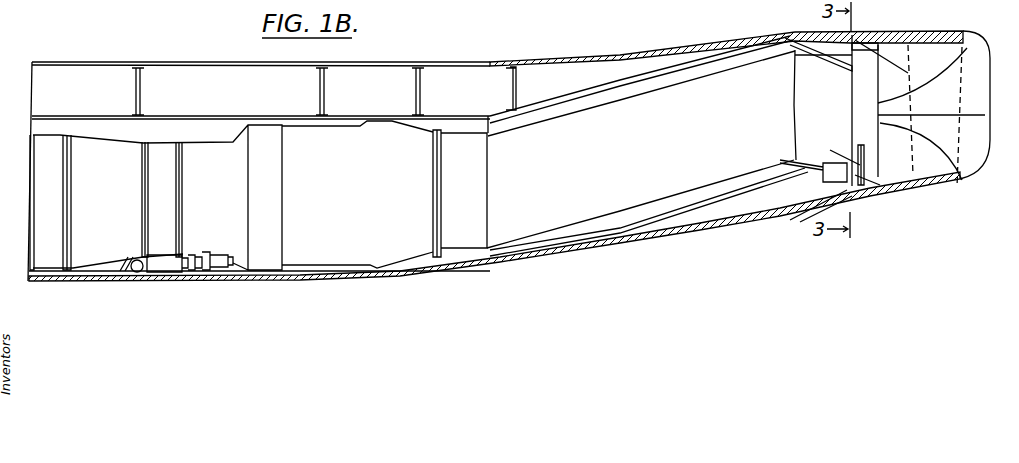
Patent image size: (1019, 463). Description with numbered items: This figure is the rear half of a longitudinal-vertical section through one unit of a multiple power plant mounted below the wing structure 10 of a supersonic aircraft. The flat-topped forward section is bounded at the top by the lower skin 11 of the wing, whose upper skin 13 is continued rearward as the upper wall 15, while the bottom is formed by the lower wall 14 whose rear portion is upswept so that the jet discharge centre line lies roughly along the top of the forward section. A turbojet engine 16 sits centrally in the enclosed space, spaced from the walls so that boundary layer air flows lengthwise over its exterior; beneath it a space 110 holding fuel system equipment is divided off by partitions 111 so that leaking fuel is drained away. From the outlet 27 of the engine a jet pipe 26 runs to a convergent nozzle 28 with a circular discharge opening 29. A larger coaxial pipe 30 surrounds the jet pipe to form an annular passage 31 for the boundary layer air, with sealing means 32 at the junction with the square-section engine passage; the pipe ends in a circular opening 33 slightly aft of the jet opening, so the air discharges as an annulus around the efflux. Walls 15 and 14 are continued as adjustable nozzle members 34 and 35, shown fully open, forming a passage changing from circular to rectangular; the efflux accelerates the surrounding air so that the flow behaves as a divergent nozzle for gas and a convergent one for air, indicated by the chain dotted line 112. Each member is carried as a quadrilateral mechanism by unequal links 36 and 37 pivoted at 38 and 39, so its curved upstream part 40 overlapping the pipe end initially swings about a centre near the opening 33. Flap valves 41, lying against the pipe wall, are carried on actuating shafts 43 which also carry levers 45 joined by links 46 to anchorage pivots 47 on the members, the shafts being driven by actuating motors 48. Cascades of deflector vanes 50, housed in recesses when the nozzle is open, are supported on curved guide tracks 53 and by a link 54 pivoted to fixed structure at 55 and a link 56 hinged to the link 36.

The wing structure 10 is at (90, 72).
The lower skin of the wing structure 11 is at (180, 117).
The upper skin of the wing structure 13 is at (183, 63).
The lower wall 14 is at (415, 271).
The upper wall 15 is at (610, 57).
The turbojet engine 16 is at (231, 195).
The jet pipe 26 is at (649, 206).
The outlet of the engine 27 is at (436, 175).
The convergent nozzle 28 is at (783, 37).
The circular discharge opening 29 is at (852, 97).
The coaxial pipe 30 is at (577, 97).
The annular passage 31 is at (598, 100).
The sealing means 32 is at (490, 116).
The circular opening 33 is at (852, 118).
The adjustable nozzle member 34 is at (940, 37).
The adjustable nozzle member 35 is at (943, 203).
The link 36 is at (935, 108).
The link 37 is at (956, 140).
The pivot 38 is at (931, 114).
The pivot 39 is at (962, 101).
The upstream part 40 is at (877, 36).
The flap valve 41 is at (803, 38).
The actuating shaft 43 is at (853, 38).
The lever 45 is at (847, 152).
The link 46 is at (868, 153).
The anchorage pivot 47 is at (887, 196).
The actuating motor 48 is at (823, 180).
The cascade of deflector vanes 50 is at (897, 38).
The curved guide track 53 is at (853, 197).
The link 54 is at (851, 110).
The pivot 55 is at (847, 61).
The link 56 is at (908, 160).
The space 110 is at (146, 265).
The partition 111 is at (243, 278).
The chain dotted line 112 is at (957, 187).